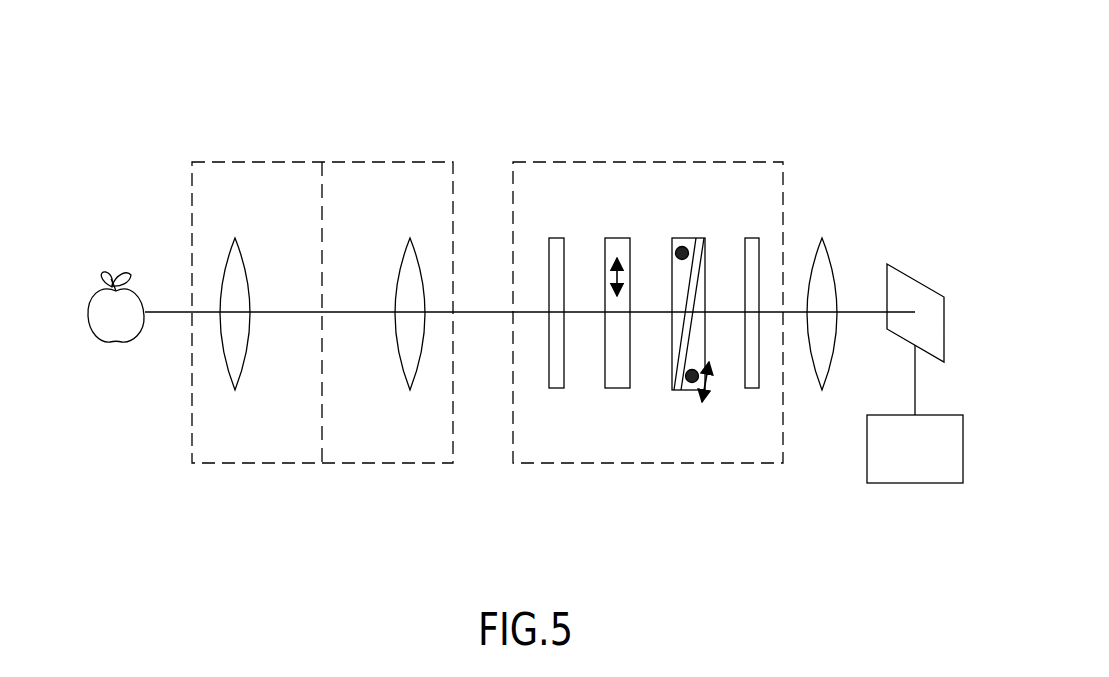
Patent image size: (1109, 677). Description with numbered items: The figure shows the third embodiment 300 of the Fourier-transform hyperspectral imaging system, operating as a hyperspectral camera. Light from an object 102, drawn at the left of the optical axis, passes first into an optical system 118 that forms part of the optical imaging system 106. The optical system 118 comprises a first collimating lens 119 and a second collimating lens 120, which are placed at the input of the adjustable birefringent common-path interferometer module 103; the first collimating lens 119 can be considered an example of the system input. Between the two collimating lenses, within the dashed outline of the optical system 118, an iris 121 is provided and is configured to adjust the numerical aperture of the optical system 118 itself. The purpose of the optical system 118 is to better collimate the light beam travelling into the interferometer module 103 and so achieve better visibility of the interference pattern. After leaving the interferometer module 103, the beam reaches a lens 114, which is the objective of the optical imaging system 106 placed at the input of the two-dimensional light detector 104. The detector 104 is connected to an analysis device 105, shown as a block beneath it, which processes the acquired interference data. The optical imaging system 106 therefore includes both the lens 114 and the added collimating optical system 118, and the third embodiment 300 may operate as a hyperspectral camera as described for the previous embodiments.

The third embodiment 300 is at (522, 89).
The object 102 is at (123, 343).
The adjustable birefringent common-path interferometer module 103 is at (703, 138).
The two-dimensional light detector 104 is at (906, 272).
The analysis device 105 is at (917, 485).
The optical imaging system 106 is at (543, 304).
The lens 114 is at (807, 240).
The optical system 118 is at (322, 304).
The first collimating lens 119 is at (249, 358).
The second collimating lens 120 is at (424, 363).
The iris 121 is at (322, 430).